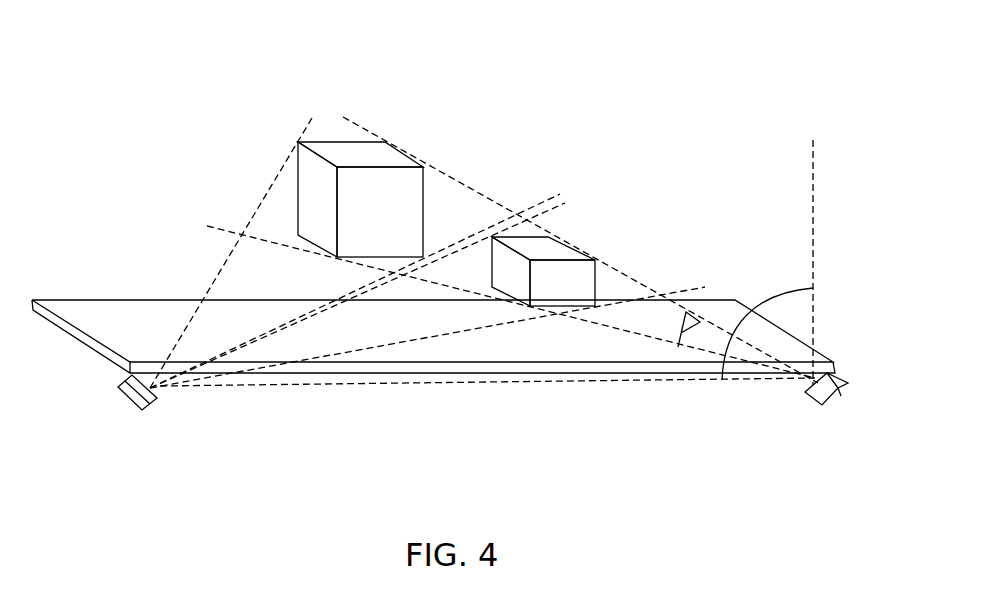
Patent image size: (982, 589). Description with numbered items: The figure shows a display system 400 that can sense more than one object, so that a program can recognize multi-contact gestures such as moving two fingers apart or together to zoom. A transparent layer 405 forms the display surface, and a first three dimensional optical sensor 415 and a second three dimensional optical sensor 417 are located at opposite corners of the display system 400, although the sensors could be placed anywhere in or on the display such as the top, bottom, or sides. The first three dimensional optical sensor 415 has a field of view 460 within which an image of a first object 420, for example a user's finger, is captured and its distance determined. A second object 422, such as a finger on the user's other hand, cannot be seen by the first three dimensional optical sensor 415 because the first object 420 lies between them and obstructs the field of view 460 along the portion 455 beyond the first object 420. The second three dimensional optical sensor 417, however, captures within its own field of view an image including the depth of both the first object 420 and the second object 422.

The display system 400 is at (718, 50).
The transparent layer 405 is at (725, 365).
The first three dimensional optical sensor 415 is at (823, 404).
The second three dimensional optical sensor 417 is at (146, 410).
The first object 420 is at (597, 278).
The second object 422 is at (402, 198).
The portion of the field of view 455 is at (700, 322).
The field of view 460 is at (783, 293).